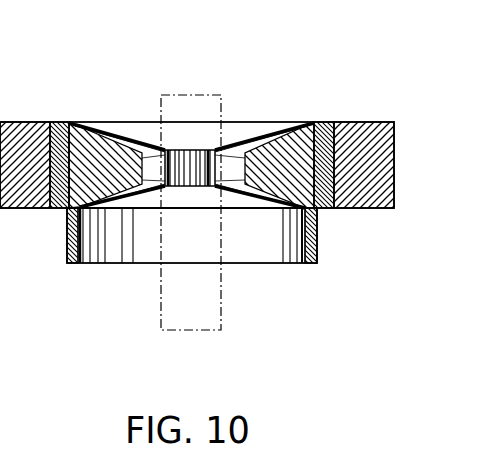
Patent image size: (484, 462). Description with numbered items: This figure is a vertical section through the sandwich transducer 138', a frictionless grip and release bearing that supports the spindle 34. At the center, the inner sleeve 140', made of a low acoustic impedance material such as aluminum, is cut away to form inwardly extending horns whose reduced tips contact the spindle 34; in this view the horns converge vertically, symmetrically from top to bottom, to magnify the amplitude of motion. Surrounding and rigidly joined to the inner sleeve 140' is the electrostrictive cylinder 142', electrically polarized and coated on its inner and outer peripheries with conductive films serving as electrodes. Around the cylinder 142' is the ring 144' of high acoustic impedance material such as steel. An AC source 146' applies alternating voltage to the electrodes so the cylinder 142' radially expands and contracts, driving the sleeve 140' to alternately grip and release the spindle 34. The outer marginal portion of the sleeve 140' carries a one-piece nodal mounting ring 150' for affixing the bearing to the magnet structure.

The spindle 34 is at (192, 95).
The sandwich transducer bearing 138' is at (197, 117).
The inner sleeve 140' is at (191, 132).
The electrostrictive cylinder 142' is at (326, 240).
The ring 144' is at (198, 138).
The AC source 146' is at (191, 124).
The nodal mounting ring 150' is at (162, 244).